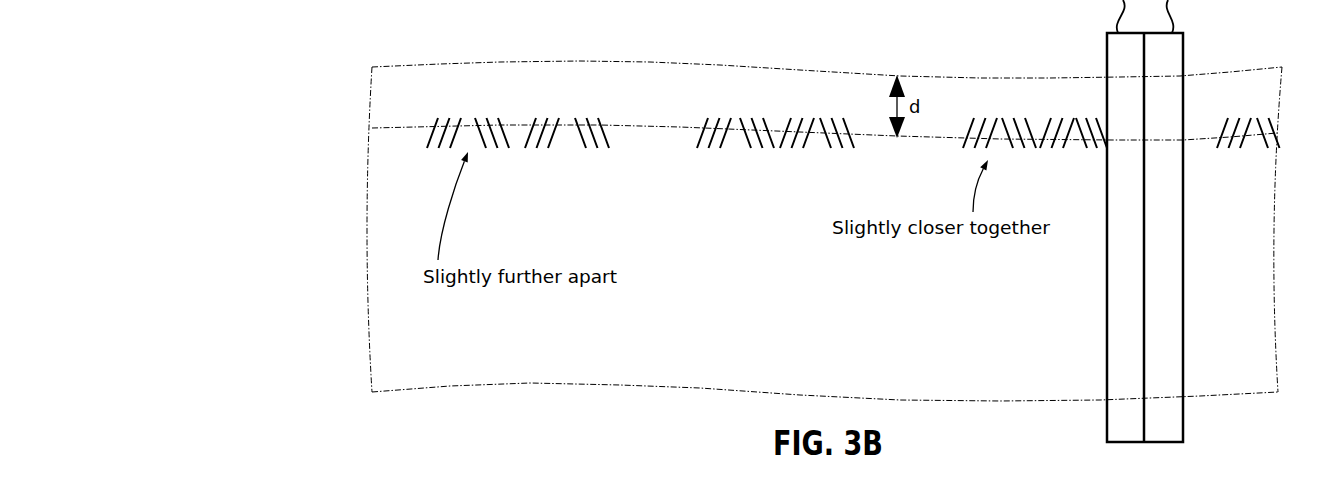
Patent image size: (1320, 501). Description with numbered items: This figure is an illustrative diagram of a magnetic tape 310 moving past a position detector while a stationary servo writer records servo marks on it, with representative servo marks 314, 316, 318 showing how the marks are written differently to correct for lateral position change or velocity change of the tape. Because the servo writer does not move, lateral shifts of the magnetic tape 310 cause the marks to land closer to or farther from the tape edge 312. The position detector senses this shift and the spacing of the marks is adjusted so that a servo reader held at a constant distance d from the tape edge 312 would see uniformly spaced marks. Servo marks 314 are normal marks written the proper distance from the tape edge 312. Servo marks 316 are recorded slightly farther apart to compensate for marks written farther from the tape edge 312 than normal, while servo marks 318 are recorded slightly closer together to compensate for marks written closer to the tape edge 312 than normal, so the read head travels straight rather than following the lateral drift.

The magnetic tape 310 is at (368, 360).
The tape edge 312 is at (395, 62).
The servo marks 314 is at (772, 120).
The servo marks 316 is at (512, 117).
The servo marks 318 is at (1030, 120).